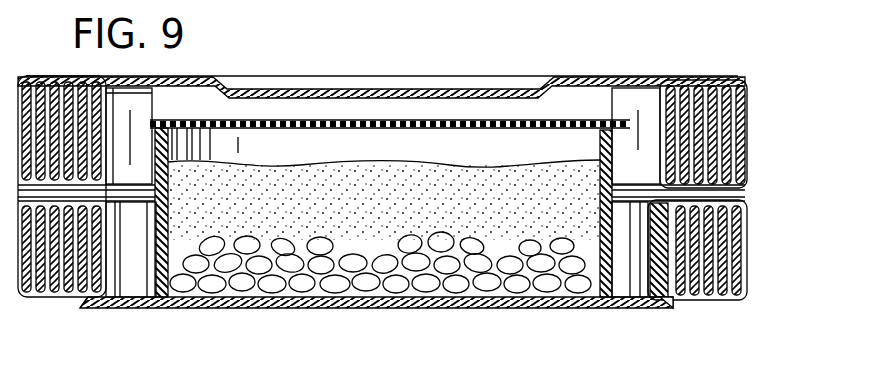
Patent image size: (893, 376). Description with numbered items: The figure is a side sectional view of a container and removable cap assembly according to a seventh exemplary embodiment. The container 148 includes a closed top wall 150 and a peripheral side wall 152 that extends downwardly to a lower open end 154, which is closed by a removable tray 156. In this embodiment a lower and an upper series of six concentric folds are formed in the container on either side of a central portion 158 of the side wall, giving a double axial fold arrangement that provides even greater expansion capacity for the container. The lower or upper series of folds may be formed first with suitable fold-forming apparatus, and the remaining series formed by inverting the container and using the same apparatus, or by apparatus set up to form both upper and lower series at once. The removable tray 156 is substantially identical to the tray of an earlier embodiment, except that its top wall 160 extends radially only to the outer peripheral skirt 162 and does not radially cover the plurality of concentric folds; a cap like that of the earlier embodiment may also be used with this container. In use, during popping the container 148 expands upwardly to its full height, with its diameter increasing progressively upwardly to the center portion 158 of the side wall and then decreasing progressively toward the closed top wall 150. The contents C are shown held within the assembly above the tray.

The container 148 is at (762, 63).
The closed top wall 150 is at (475, 78).
The peripheral side wall 152 is at (751, 220).
The lower open end 154 is at (686, 312).
The removable tray 156 is at (515, 315).
The central portion of the side wall 158 is at (745, 178).
The top wall 160 is at (287, 310).
The outer peripheral skirt 162 is at (88, 306).
The contents C is at (493, 192).